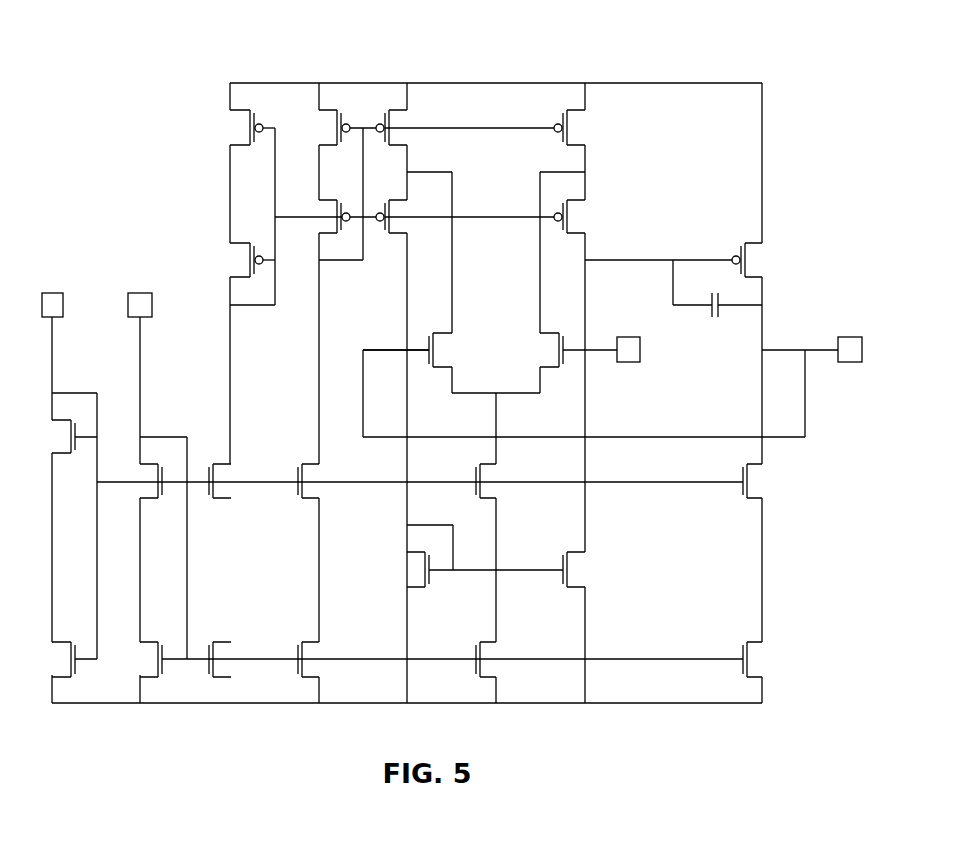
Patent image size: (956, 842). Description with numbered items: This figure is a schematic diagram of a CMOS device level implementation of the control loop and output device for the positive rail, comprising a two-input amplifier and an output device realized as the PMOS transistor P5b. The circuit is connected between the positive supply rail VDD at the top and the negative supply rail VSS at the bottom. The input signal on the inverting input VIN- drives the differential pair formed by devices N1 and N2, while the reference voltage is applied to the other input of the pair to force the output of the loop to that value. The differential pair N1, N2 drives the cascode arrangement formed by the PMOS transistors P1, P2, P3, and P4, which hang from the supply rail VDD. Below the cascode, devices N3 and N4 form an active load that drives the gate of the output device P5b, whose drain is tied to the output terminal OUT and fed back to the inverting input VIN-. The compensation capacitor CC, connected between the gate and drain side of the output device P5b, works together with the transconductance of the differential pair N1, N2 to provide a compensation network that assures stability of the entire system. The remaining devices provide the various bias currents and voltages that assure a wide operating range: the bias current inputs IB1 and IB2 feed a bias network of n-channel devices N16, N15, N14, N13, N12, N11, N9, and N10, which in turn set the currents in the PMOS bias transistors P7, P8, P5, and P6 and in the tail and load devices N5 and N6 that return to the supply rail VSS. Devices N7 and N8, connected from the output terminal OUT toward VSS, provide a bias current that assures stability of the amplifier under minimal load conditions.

The positive supply rail VDD is at (496, 73).
The negative supply rail VSS is at (407, 711).
The PMOS transistor P1 is at (402, 126).
The PMOS transistor P2 is at (581, 126).
The PMOS transistor P3 is at (402, 215).
The PMOS transistor P4 is at (581, 215).
The PMOS transistor P5 is at (321, 126).
The PMOS output device P5b is at (758, 260).
The PMOS transistor P6 is at (321, 215).
The PMOS transistor P7 is at (240, 127).
The PMOS transistor P8 is at (240, 260).
The differential pair device N1 is at (446, 350).
The differential pair device N2 is at (544, 350).
The active load device N3 is at (410, 569).
The active load device N4 is at (581, 569).
The NMOS transistor N5 is at (498, 479).
The NMOS transistor N6 is at (498, 657).
The bias current device N7 is at (765, 479).
The bias current device N8 is at (765, 657).
The NMOS transistor N9 is at (320, 479).
The NMOS transistor N10 is at (324, 657).
The NMOS transistor N11 is at (236, 657).
The NMOS transistor N12 is at (236, 479).
The NMOS transistor N13 is at (133, 657).
The NMOS transistor N14 is at (133, 479).
The NMOS transistor N15 is at (46, 657).
The NMOS transistor N16 is at (46, 436).
The bias current input IB1 is at (53, 296).
The bias current input IB2 is at (140, 296).
The inverting input VIN- is at (396, 363).
The output terminal OUT is at (851, 358).
The compensation capacitor CC is at (717, 302).